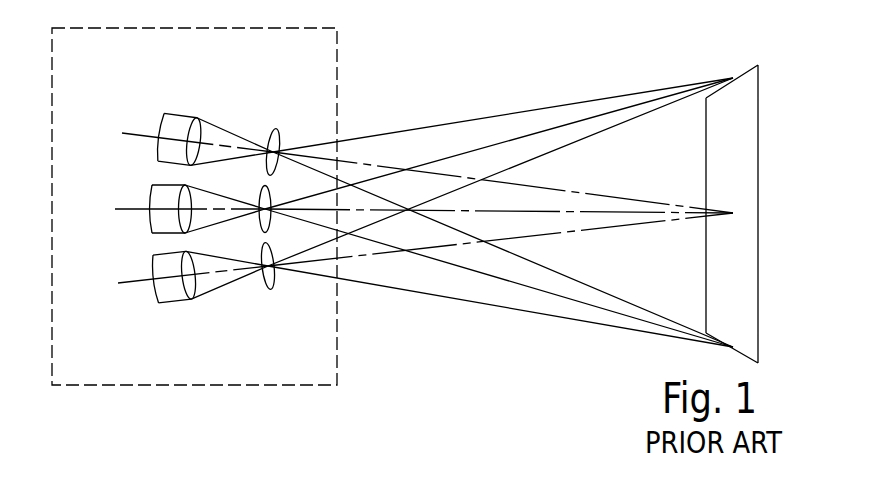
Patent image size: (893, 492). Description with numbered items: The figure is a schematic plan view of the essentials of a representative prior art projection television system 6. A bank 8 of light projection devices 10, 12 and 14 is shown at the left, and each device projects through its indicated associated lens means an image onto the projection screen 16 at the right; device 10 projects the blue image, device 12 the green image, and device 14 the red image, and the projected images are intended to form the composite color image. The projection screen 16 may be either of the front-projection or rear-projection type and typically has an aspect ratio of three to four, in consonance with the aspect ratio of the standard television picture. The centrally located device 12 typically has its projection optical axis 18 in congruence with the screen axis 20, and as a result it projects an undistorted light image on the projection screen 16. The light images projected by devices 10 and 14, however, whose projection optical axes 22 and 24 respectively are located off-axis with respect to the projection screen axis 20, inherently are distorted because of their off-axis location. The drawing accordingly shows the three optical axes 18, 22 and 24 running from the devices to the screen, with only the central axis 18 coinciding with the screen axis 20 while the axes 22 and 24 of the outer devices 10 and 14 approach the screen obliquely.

The projection television system 6 is at (453, 80).
The bank of light projection devices 8 is at (52, 306).
The light projection device 10 is at (205, 115).
The light projection device 12 is at (157, 178).
The light projection device 14 is at (192, 307).
The projection screen 16 is at (760, 150).
The projection optical axis 18 is at (119, 211).
The screen axis 20 is at (453, 210).
The projection optical axis 22 is at (362, 163).
The projection optical axis 24 is at (353, 258).